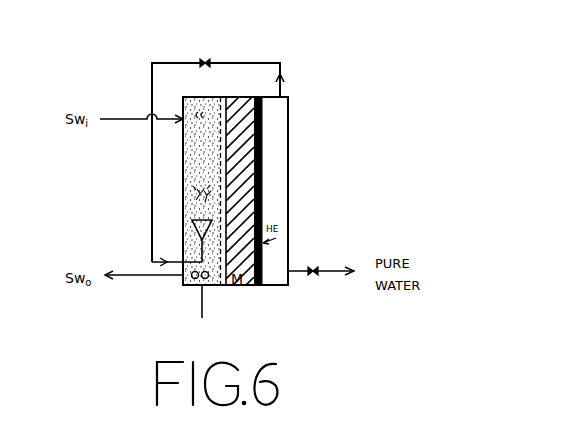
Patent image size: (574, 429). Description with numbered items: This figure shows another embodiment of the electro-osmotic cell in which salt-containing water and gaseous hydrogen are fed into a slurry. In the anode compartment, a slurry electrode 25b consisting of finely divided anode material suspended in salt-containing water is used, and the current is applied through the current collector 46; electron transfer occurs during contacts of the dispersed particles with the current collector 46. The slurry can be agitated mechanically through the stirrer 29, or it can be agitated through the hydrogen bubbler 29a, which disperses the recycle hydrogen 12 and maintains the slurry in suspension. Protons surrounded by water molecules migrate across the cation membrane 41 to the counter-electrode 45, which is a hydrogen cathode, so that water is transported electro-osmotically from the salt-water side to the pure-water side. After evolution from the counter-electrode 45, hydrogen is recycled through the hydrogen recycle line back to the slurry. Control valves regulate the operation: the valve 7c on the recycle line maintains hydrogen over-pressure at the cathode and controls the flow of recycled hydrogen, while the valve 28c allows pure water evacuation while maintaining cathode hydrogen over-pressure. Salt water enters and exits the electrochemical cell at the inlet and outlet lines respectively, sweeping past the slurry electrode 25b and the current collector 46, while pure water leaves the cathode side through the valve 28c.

The valve 7c is at (200, 60).
The recycle hydrogen 12 is at (280, 63).
The current collector 46 is at (223, 97).
The cation membrane 41 is at (239, 97).
The counter-electrode 45 is at (262, 115).
The hydrogen bubbler 29a is at (192, 220).
The control valve 28c is at (315, 268).
The stirrer 29 is at (202, 298).
The slurry electrode 25b is at (212, 284).